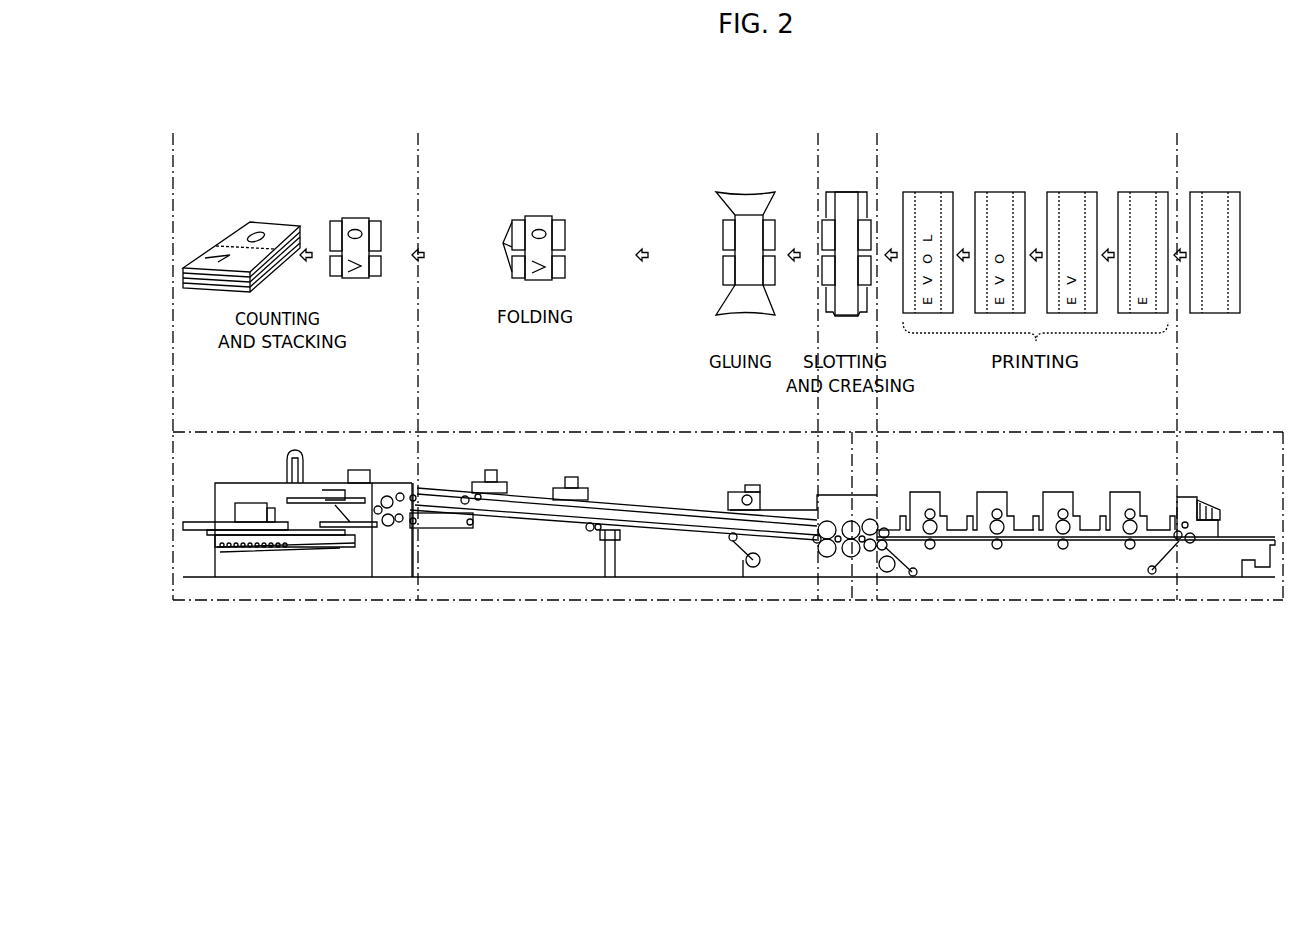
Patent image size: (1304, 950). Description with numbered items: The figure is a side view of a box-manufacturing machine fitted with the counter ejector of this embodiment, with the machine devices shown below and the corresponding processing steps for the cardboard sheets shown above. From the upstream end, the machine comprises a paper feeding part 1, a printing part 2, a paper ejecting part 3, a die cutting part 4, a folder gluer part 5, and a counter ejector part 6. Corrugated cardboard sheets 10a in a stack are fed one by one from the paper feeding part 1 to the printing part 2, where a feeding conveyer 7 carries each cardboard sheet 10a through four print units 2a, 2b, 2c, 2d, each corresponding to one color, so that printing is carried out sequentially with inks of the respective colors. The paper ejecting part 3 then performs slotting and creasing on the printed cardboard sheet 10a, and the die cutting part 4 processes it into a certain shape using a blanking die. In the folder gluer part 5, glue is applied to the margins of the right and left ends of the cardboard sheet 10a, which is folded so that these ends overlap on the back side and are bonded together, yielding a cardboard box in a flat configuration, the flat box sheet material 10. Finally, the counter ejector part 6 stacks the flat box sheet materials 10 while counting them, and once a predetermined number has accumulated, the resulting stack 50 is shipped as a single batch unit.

The paper feeding part 1 is at (1232, 602).
The printing part 2 is at (1026, 561).
The print unit 2a is at (1124, 493).
The print unit 2b is at (1057, 493).
The print unit 2c is at (991, 492).
The print unit 2d is at (924, 492).
The paper ejecting part 3 is at (866, 602).
The die cutting part 4 is at (837, 602).
The folder gluer part 5 is at (622, 602).
The counter ejector part 6 is at (296, 602).
The feeding conveyer 7 is at (1098, 541).
The flat box sheet material 10 is at (740, 202).
The cardboard sheet 10a is at (1214, 206).
The stack 50 is at (260, 222).